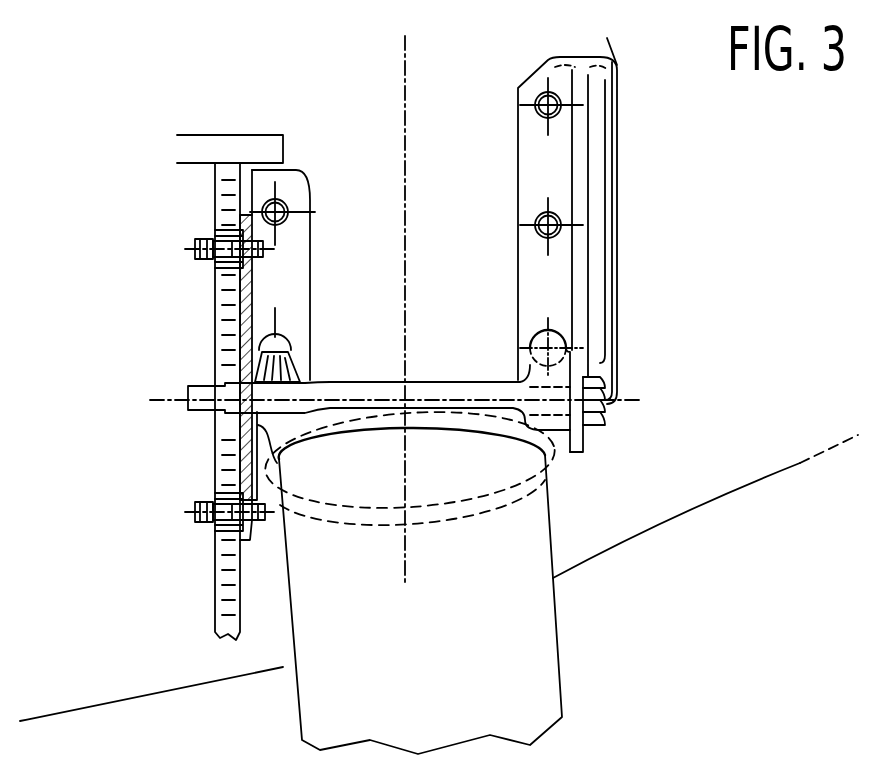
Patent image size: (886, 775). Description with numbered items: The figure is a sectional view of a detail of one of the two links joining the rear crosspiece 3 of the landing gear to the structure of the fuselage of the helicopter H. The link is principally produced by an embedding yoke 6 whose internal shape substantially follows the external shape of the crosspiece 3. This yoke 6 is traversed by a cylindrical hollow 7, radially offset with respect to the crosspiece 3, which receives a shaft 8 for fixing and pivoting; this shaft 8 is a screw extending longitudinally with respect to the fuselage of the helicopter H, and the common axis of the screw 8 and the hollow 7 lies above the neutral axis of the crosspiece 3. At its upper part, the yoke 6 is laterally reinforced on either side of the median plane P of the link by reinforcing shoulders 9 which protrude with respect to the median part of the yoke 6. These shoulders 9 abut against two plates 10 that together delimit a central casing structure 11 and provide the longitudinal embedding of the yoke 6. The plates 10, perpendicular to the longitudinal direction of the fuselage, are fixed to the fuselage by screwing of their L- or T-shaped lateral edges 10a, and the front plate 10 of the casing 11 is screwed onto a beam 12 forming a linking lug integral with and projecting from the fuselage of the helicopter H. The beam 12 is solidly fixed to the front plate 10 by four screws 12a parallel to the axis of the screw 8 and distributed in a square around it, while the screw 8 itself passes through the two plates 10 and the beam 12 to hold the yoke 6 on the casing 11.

The rear crosspiece 3 is at (528, 612).
The yoke 6 is at (553, 450).
The cylindrical hollow 7 is at (443, 382).
The shaft 8 is at (328, 380).
The reinforcing shoulders 9 is at (290, 348).
The plates 10 is at (414, 289).
The lateral edges 10a is at (290, 270).
The central casing structure 11 is at (628, 153).
The beam 12 is at (215, 598).
The screws 12a is at (228, 235).
The median plane P is at (403, 228).
The helicopter H is at (715, 478).